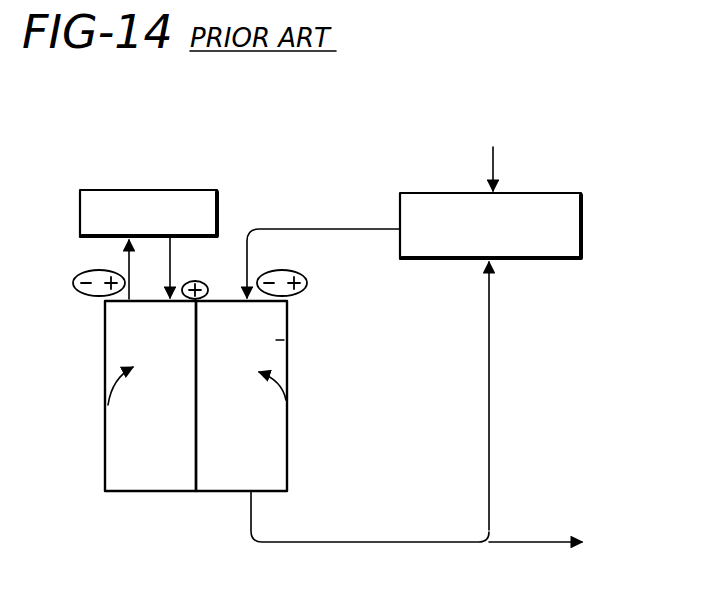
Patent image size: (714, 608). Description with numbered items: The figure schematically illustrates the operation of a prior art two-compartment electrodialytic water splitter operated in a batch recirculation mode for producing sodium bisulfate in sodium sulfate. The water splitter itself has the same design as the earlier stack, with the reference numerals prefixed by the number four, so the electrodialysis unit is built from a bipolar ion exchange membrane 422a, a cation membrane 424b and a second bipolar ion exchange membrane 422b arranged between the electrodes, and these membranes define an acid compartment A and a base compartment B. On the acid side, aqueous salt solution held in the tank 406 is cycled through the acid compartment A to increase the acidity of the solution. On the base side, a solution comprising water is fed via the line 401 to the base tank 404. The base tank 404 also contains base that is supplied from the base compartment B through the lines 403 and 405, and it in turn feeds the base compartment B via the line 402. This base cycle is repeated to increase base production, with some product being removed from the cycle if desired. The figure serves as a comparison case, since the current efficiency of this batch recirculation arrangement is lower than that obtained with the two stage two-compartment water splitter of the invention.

The line 401 is at (494, 170).
The line 402 is at (346, 228).
The line 403 is at (416, 541).
The base tank 404 is at (583, 238).
The line 405 is at (490, 301).
The tank 406 is at (170, 188).
The bipolar ion exchange membrane 422a is at (142, 437).
The cation membrane 424b is at (232, 436).
The bipolar ion exchange membrane 422b is at (322, 434).